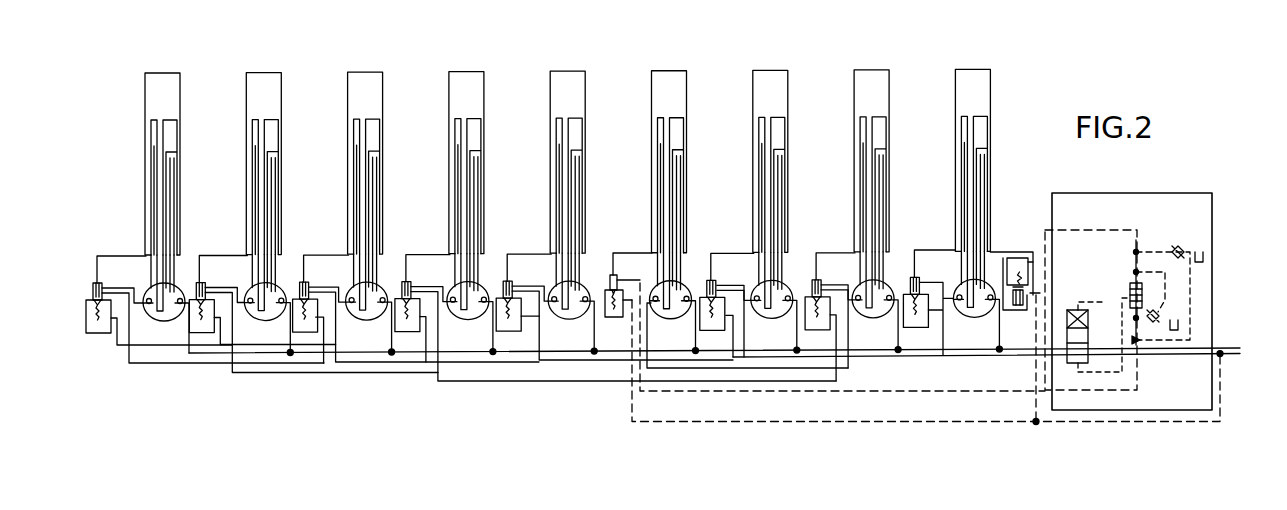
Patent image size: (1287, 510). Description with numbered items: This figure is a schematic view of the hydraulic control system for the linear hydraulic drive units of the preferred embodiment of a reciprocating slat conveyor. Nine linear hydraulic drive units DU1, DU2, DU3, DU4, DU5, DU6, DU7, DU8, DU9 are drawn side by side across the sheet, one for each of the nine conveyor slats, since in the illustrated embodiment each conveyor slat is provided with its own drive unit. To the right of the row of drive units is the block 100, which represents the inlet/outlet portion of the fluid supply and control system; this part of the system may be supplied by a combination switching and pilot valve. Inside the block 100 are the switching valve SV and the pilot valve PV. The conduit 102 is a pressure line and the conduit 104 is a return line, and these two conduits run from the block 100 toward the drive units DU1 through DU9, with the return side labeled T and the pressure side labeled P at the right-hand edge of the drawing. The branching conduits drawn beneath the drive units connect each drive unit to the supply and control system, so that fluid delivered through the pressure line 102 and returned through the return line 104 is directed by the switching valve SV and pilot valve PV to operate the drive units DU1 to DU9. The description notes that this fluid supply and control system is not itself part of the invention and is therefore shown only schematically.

The inlet/outlet portion 100 is at (1175, 193).
The pressure line 102 is at (1232, 362).
The return line 104 is at (1228, 345).
The linear hydraulic drive unit DU1 is at (161, 73).
The linear hydraulic drive unit DU2 is at (262, 72).
The linear hydraulic drive unit DU3 is at (364, 72).
The linear hydraulic drive unit DU4 is at (466, 72).
The linear hydraulic drive unit DU5 is at (568, 71).
The linear hydraulic drive unit DU6 is at (670, 70).
The linear hydraulic drive unit DU7 is at (770, 70).
The linear hydraulic drive unit DU8 is at (868, 70).
The linear hydraulic drive unit DU9 is at (973, 70).
The pilot valve PV is at (1130, 296).
The switching valve SV is at (1063, 362).
The tank port T is at (1238, 335).
The pump port P is at (987, 363).